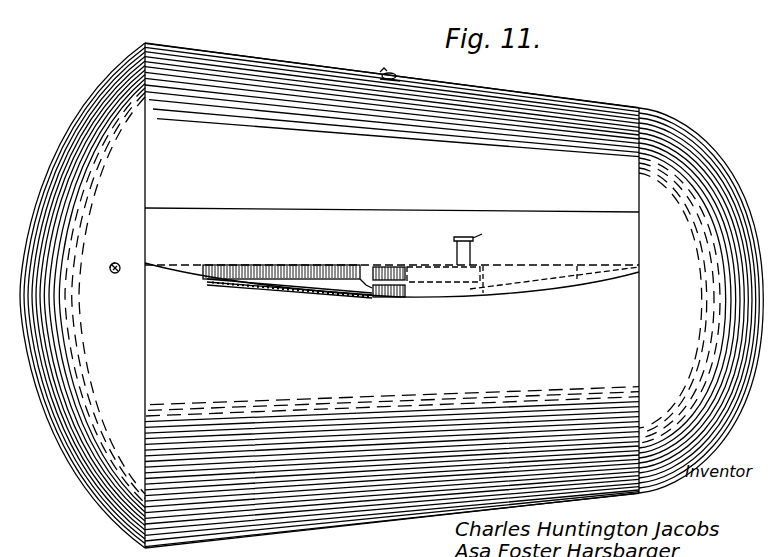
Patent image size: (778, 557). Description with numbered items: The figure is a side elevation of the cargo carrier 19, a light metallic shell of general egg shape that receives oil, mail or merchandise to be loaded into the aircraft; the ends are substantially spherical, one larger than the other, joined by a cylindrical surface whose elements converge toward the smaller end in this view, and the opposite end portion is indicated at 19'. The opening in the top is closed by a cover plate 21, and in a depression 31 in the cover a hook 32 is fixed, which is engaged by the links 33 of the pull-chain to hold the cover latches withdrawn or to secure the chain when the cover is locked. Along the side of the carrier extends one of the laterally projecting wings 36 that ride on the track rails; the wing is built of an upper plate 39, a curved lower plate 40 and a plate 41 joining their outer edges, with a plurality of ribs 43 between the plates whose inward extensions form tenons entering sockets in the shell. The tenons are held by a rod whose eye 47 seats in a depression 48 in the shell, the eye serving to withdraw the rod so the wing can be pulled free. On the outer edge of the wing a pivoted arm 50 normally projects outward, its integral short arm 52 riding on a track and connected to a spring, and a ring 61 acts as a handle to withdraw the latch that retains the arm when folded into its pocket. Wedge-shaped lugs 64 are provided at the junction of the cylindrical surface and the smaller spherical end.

The cargo carrier 19 is at (701, 300).
The opposite end head of tank 19' is at (82, 295).
The cover plate 21 is at (562, 104).
The depression 31 is at (405, 80).
The hook 32 is at (382, 70).
The links 33 is at (396, 76).
The wings 36 is at (432, 297).
The upper plate 39 is at (515, 265).
The curved lower plate 40 is at (521, 293).
The plate 41 is at (540, 286).
The ribs 43 is at (318, 264).
The eye 47 is at (111, 275).
The depression 48 is at (113, 263).
The arm 50 is at (272, 299).
The short arm 52 is at (428, 269).
The ring 61 is at (472, 243).
The wedge-shaped lugs 64 is at (640, 108).